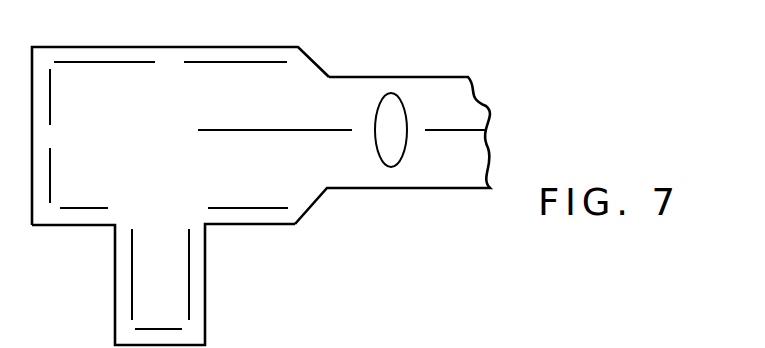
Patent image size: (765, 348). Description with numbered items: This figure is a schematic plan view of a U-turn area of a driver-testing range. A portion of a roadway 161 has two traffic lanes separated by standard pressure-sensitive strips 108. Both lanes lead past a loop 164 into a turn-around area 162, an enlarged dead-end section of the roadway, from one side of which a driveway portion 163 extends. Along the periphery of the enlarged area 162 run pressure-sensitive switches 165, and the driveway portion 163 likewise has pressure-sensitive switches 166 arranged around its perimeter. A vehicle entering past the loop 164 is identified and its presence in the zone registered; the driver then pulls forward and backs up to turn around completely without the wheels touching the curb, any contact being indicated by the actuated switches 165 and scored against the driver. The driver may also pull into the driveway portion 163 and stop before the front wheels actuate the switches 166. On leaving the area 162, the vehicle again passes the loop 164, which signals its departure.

The pressure-sensitive strips 108 is at (262, 132).
The roadway 161 is at (440, 82).
The turn-around area 162 is at (171, 58).
The driveway portion 163 is at (197, 274).
The loop 164 is at (384, 113).
The pressure-sensitive switches 165 is at (188, 67).
The switches 166 is at (188, 264).